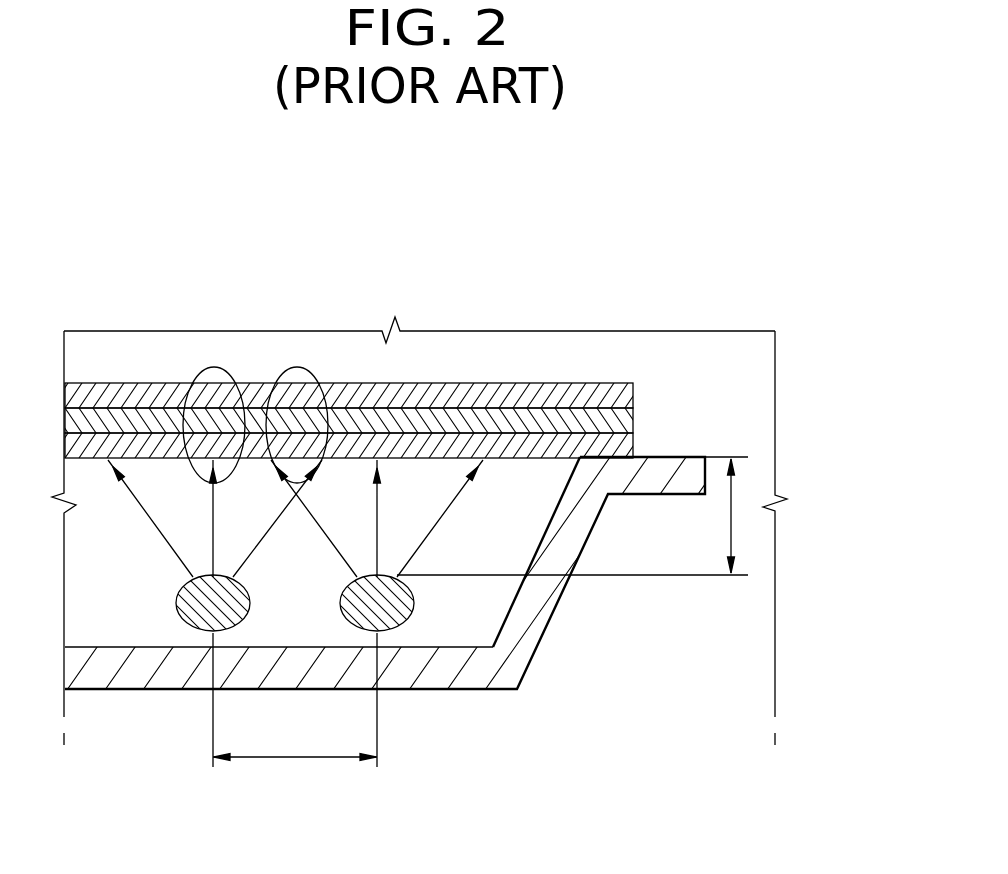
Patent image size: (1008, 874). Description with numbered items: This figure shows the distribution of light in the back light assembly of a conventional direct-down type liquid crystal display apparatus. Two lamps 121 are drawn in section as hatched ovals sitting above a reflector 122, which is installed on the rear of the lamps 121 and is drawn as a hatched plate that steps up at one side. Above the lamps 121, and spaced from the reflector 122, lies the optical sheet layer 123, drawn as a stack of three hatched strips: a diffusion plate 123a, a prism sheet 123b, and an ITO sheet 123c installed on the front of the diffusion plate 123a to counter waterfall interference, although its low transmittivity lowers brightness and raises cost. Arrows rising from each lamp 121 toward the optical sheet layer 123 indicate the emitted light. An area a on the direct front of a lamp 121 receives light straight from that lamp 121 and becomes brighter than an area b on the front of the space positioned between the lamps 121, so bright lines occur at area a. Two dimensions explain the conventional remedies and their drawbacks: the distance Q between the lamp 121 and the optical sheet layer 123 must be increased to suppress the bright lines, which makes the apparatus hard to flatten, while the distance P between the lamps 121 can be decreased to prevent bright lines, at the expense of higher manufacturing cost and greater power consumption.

The lamp 121 is at (193, 618).
The reflector 122 is at (498, 678).
The optical sheet layer 123 is at (484, 412).
The diffusion plate 123a is at (633, 440).
The prism sheet 123b is at (633, 393).
The ITO sheet 123c is at (633, 420).
The area on the direct front of the lamp a is at (212, 367).
The area on the front of a space between the lamps b is at (296, 366).
The distance between the lamps P is at (295, 708).
The distance between the lamp and the optical sheet layer Q is at (575, 516).